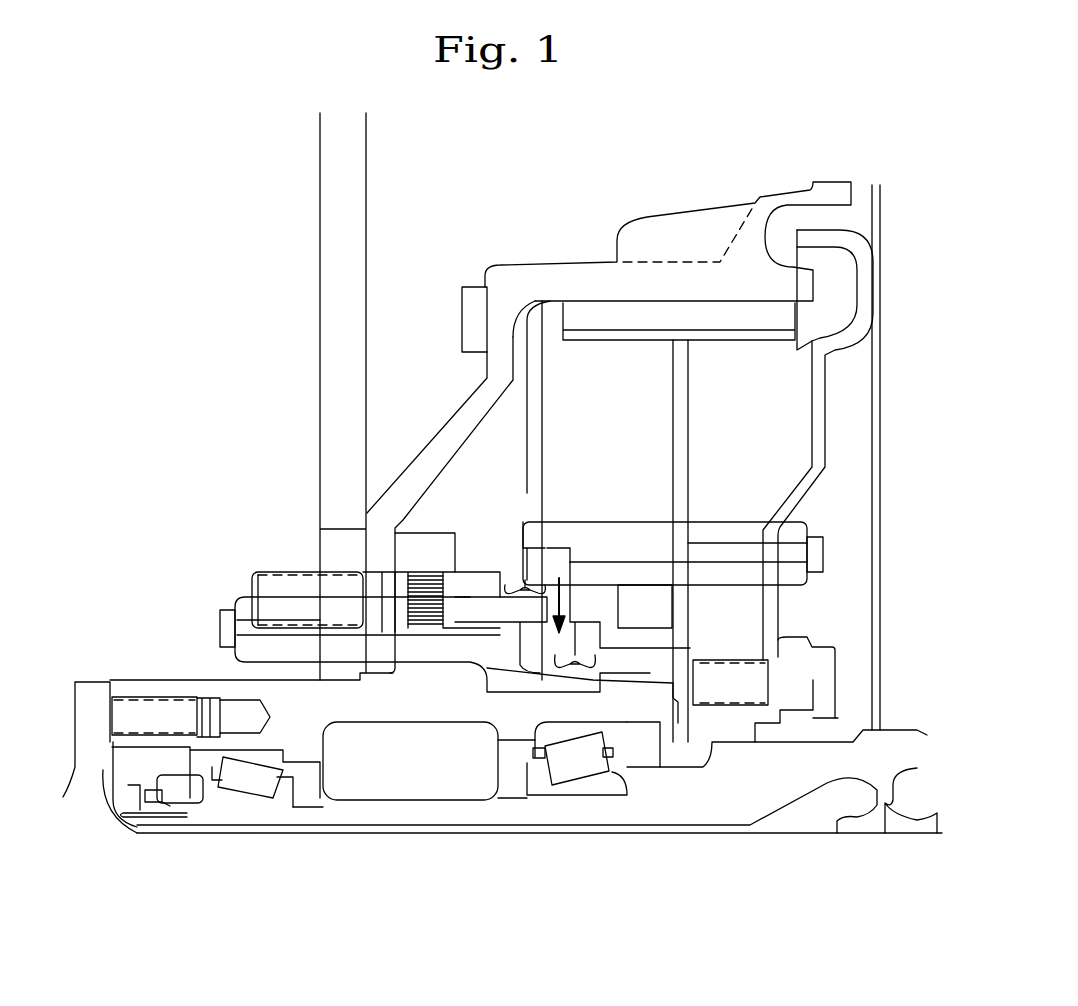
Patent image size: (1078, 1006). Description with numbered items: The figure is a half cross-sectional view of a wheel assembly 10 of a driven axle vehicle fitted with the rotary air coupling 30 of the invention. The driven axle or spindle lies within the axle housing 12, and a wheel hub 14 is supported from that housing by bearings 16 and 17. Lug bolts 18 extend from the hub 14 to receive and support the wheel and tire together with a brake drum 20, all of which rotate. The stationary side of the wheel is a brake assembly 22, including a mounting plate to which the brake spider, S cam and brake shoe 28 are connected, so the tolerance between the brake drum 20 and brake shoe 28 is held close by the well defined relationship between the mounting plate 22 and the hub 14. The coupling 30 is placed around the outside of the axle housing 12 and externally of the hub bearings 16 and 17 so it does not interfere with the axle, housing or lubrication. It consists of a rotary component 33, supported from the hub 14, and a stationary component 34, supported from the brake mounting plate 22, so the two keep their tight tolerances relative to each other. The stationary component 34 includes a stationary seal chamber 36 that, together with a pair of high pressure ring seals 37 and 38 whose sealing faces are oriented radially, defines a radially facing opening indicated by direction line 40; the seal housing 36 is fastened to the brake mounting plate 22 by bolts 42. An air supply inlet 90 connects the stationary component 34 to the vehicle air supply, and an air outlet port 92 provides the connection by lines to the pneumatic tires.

The wheel assembly 10 is at (256, 348).
The axle housing 12 is at (424, 813).
The wheel hub 14 is at (278, 697).
The bearing 16 is at (254, 787).
The bearing 17 is at (578, 768).
The lug bolts 18 is at (276, 584).
The brake drum 20 is at (527, 277).
The brake assembly 22 is at (778, 610).
The brake shoe 28 is at (609, 321).
The rotary air coupling 30 is at (585, 512).
The rotary component 33 is at (423, 655).
The stationary component 34 is at (736, 525).
The stationary seal chamber 36 is at (555, 558).
The high pressure seal 37 is at (520, 588).
The high pressure seal 38 is at (590, 654).
The direction line 40 is at (553, 603).
The bolts 42 is at (797, 680).
The air supply inlet 90 is at (820, 553).
The air outlet port 92 is at (222, 624).